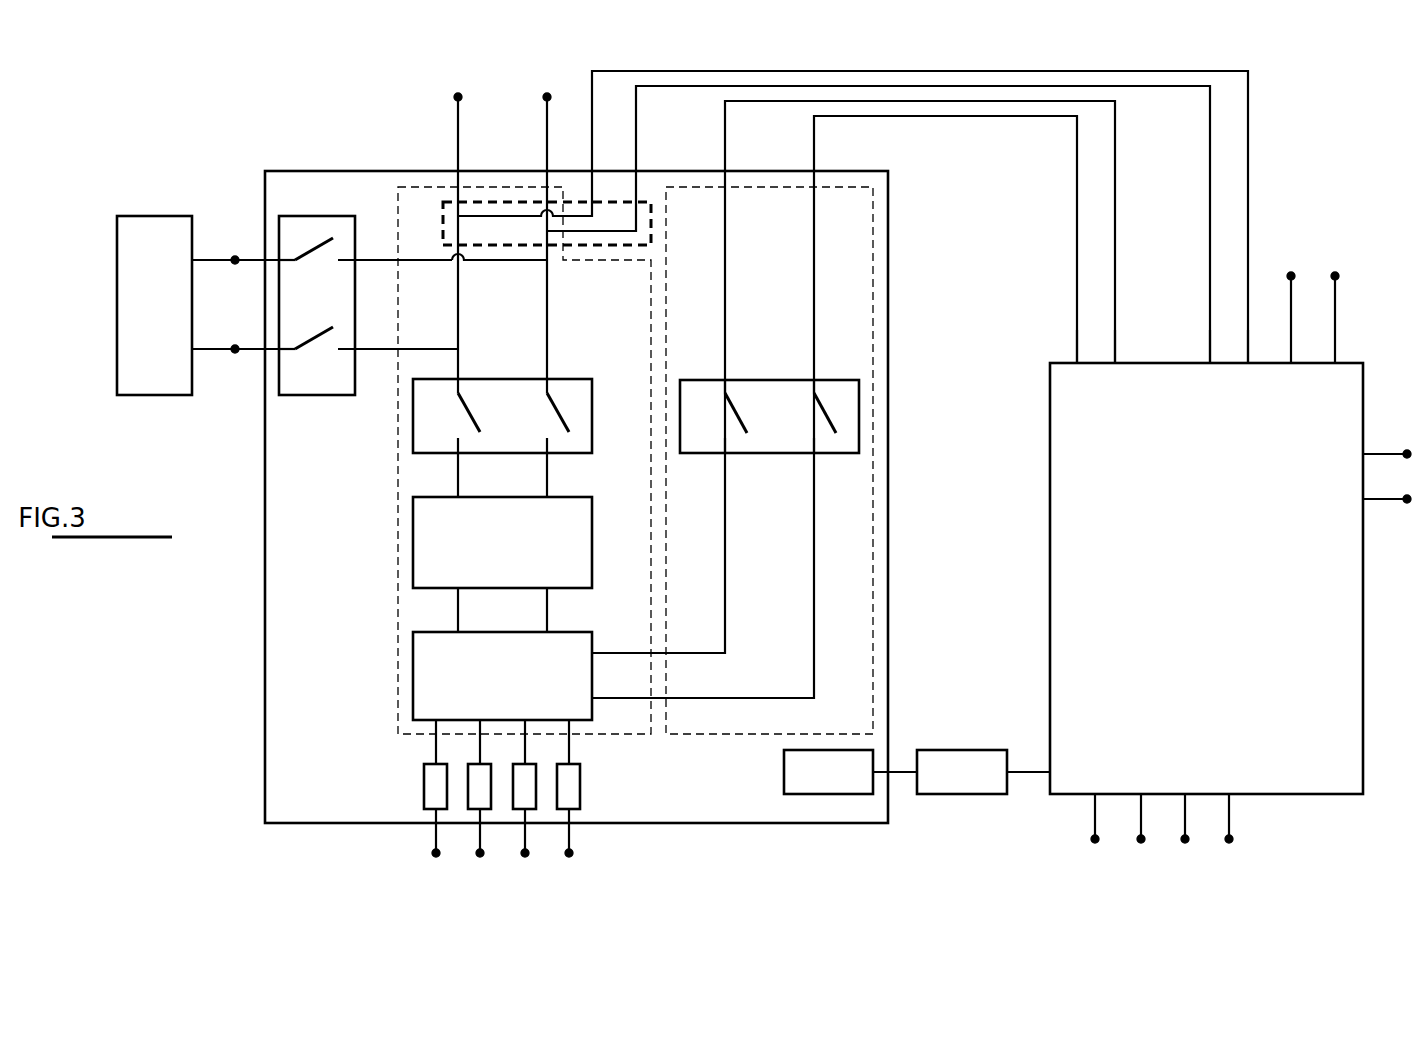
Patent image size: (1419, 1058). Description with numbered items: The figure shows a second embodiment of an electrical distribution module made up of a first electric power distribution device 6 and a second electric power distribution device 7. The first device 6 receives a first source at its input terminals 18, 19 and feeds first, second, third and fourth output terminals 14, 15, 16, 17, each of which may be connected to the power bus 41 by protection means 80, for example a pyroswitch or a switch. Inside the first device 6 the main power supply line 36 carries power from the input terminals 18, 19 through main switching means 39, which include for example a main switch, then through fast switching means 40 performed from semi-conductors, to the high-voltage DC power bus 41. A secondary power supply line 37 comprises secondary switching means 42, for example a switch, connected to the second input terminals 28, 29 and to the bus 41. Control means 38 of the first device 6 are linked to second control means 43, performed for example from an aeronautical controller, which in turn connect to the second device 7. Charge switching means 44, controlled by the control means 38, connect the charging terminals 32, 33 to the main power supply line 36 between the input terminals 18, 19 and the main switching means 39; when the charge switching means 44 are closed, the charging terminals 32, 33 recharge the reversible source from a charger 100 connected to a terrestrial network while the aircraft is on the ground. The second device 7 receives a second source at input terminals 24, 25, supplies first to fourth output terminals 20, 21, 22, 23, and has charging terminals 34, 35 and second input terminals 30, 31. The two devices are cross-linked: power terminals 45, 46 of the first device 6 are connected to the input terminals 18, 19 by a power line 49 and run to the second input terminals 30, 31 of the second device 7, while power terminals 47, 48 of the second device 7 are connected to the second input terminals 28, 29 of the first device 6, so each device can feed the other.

The first electric power distribution device 6 is at (890, 502).
The second electric power distribution device 7 is at (1048, 576).
The first output terminal 14 is at (436, 859).
The second output terminal 15 is at (480, 859).
The third output terminal 16 is at (525, 859).
The fourth output terminal 17 is at (569, 859).
The input terminal 18 is at (457, 95).
The input terminal 19 is at (547, 95).
The first output terminal 20 is at (1095, 845).
The second output terminal 21 is at (1141, 845).
The third output terminal 22 is at (1185, 845).
The fourth output terminal 23 is at (1229, 845).
The input terminal 24 is at (1290, 275).
The input terminal 25 is at (1335, 275).
The second input terminal 28 is at (726, 170).
The second input terminal 29 is at (816, 170).
The second input terminal 30 is at (1210, 363).
The second input terminal 31 is at (1248, 363).
The charging terminal 32 is at (235, 258).
The charging terminal 33 is at (235, 355).
The charging terminal 34 is at (1405, 452).
The charging terminal 35 is at (1405, 505).
The main power supply line 36 is at (388, 588).
The secondary power supply line 37 is at (888, 548).
The control means 38 is at (850, 772).
The main switching means 39 is at (413, 415).
The fast switching means 40 is at (413, 540).
The power bus 41 is at (413, 672).
The secondary switching means 42 is at (687, 380).
The second control means 43 is at (983, 772).
The charge switching means 44 is at (316, 400).
The power terminal 45 is at (592, 170).
The power terminal 46 is at (634, 170).
The power terminal 47 is at (1077, 363).
The power terminal 48 is at (1115, 363).
The power line 49 is at (492, 199).
The protection means 80 is at (472, 812).
The charger 100 is at (152, 216).